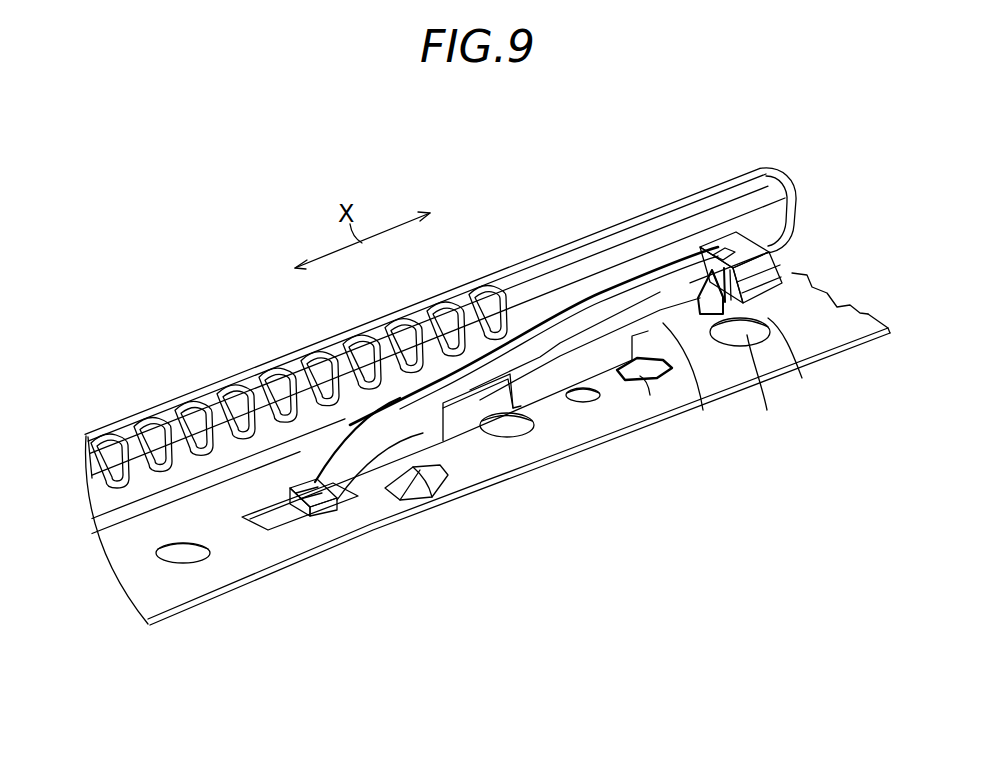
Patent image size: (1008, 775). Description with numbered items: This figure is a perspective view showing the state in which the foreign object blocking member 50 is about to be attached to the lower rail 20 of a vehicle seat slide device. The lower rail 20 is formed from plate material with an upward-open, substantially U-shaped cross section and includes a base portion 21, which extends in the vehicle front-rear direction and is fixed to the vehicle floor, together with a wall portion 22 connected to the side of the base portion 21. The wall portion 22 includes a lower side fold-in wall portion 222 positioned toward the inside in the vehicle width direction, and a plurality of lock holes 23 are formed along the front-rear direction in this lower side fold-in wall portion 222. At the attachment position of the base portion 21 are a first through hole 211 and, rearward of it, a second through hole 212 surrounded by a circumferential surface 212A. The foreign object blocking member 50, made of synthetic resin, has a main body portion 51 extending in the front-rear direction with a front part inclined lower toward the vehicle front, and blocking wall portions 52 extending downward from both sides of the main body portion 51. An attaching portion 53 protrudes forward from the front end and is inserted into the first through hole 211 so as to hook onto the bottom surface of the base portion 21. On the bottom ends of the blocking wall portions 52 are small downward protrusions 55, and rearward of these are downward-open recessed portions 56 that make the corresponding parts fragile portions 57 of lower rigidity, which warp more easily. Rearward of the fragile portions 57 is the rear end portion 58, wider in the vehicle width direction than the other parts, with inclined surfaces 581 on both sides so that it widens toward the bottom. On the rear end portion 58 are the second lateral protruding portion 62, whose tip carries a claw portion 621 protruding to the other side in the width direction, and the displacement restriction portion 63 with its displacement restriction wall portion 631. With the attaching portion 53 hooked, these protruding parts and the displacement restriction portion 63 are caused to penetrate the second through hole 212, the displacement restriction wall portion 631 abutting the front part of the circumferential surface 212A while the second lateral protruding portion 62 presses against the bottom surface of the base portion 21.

The lower rail 20 is at (120, 552).
The base portion 21 is at (148, 596).
The first through hole 211 is at (280, 525).
The second through hole 212 is at (660, 418).
The circumferential surface 212A is at (660, 418).
The wall portion 22 is at (440, 321).
The lower side fold-in wall portion 222 is at (145, 412).
The lock holes 23 is at (278, 358).
The foreign object blocking member 50 is at (542, 397).
The main body portion 51 is at (480, 364).
The blocking wall portions 52 is at (530, 395).
The attaching portion 53 is at (328, 505).
The protrusions 55 is at (648, 358).
The recessed portions 56 is at (640, 376).
The fragile portions 57 is at (690, 336).
The rear end portion 58 is at (780, 254).
The inclined surfaces 581 is at (763, 268).
The second lateral protruding portion 62 is at (826, 364).
The claw portion 621 is at (750, 348).
The displacement restriction portion 63 is at (746, 383).
The displacement restriction wall portion 631 is at (705, 362).